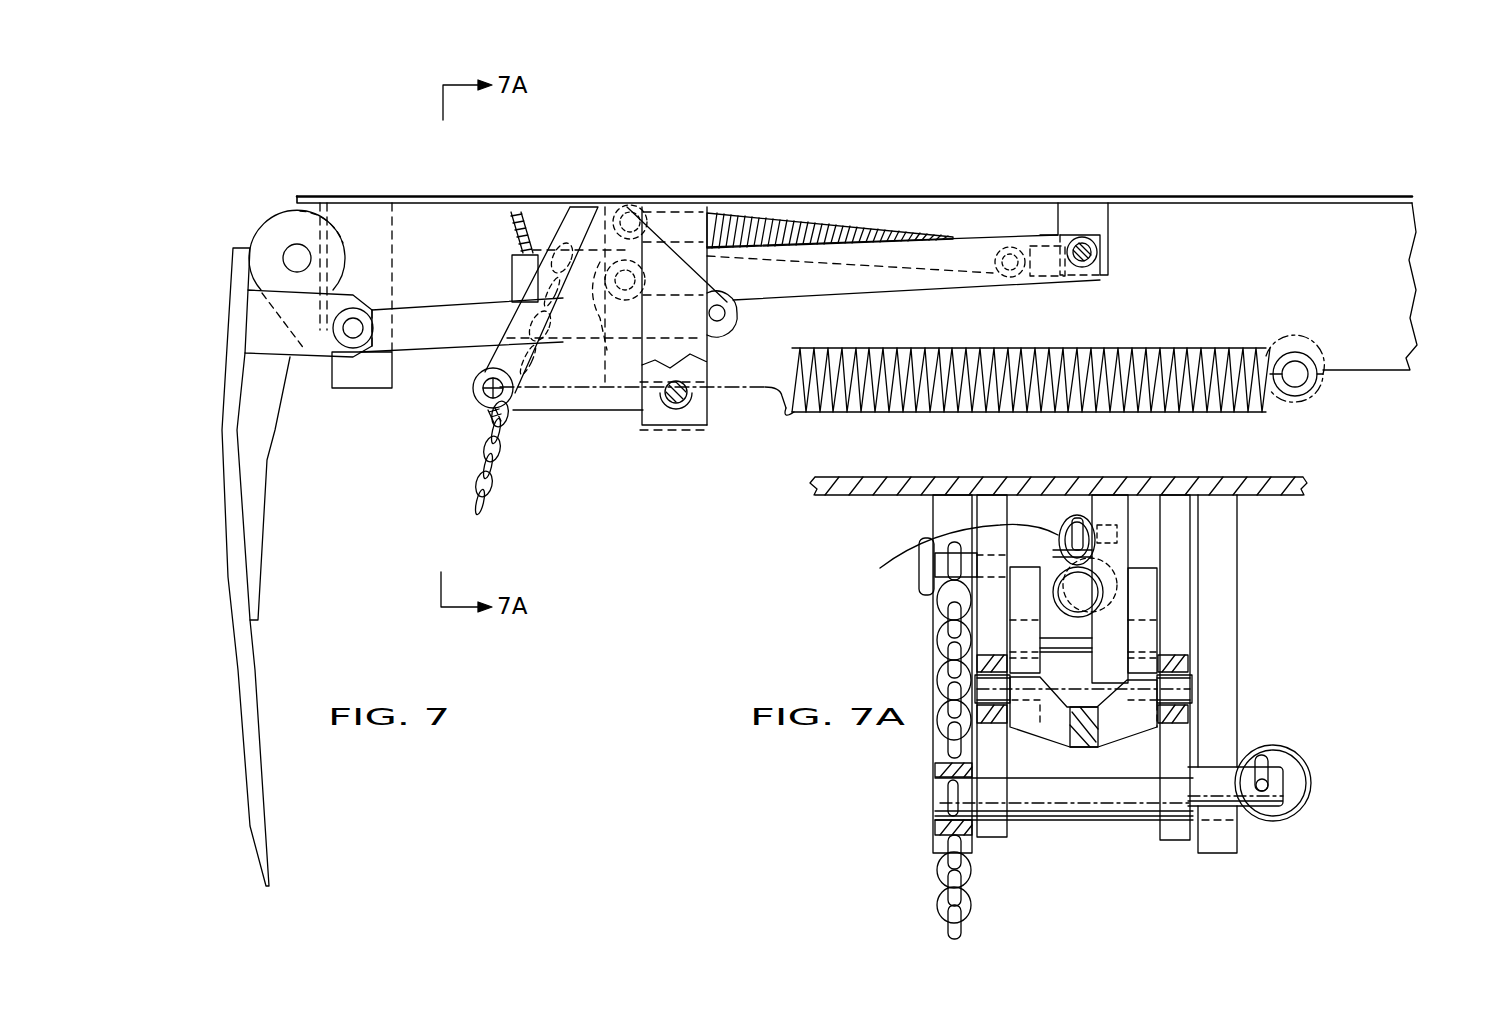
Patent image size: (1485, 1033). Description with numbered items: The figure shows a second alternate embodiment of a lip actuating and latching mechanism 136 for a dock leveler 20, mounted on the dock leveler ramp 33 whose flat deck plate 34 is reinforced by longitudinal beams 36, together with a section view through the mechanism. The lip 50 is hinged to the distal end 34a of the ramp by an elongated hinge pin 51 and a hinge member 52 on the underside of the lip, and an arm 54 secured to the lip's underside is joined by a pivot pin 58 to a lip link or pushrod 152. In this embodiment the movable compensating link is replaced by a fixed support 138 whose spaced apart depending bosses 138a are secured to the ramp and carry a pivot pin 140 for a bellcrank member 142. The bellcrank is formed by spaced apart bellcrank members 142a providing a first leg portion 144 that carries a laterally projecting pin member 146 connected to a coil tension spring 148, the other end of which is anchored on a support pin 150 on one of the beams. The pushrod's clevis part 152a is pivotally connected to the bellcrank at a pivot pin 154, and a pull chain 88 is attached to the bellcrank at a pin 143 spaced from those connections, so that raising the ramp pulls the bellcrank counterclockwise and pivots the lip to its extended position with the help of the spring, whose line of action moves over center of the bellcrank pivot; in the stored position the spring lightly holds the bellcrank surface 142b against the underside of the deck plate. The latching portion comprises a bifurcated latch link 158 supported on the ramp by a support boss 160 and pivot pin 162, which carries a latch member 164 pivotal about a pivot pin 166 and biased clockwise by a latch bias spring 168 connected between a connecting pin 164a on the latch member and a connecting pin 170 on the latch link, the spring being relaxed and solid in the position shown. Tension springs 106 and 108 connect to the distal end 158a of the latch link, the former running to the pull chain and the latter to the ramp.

In FIG. 7, the dock leveler 20 is at (1076, 162).
In FIG. 7, the dock leveler ramp 33 is at (1230, 176).
In FIG. 7, the deck plate 34 is at (893, 196).
In FIG. 7A, the deck plate 34 is at (1268, 477).
In FIG. 7, the distal end of the ramp 34a is at (310, 196).
In FIG. 7, the longitudinal beams 36 is at (1413, 283).
In FIG. 7, the lip 50 is at (218, 580).
In FIG. 7, the hinge pin 51 is at (290, 260).
In FIG. 7, the hinge member 52 is at (265, 205).
In FIG. 7, the arm 54 is at (245, 355).
In FIG. 7, the pivot pin 58 is at (355, 350).
In FIG. 7, the pull chain 88 is at (472, 513).
In FIG. 7A, the pull chain 88 is at (940, 628).
In FIG. 7, the tension spring 106 is at (490, 428).
In FIG. 7, the tension spring 108 is at (515, 215).
In FIG. 7, the lip actuating and latching mechanism 136 is at (611, 438).
In FIG. 7A, the lip actuating and latching mechanism 136 is at (1079, 868).
In FIG. 7A, the fixed support 138 is at (1243, 623).
In FIG. 7, the depending bosses 138a is at (730, 352).
In FIG. 7A, the depending bosses 138a is at (925, 510).
In FIG. 7, the pivot pin 140 is at (676, 403).
In FIG. 7A, the pivot pin 140 is at (1077, 820).
In FIG. 7, the bellcrank member 142 is at (543, 415).
In FIG. 7A, the bellcrank member 142 is at (1185, 855).
In FIG. 7A, the bellcrank members 142a is at (1018, 505).
In FIG. 7, the bellcrank surface 142b is at (615, 200).
In FIG. 7A, the bellcrank surface 142b is at (1003, 515).
In FIG. 7, the pin 143 is at (582, 200).
In FIG. 7A, the pin 143 is at (922, 595).
In FIG. 7, the first leg portion 144 is at (475, 395).
In FIG. 7A, the pin member 146 is at (1268, 810).
In FIG. 7, the coil tension spring 148 is at (960, 345).
In FIG. 7A, the coil tension spring 148 is at (1300, 755).
In FIG. 7, the support pin 150 is at (1318, 385).
In FIG. 7, the lip link or pushrod 152 is at (455, 298).
In FIG. 7A, the lip link or pushrod 152 is at (1068, 797).
In FIG. 7A, the clevis part 152a is at (1040, 728).
In FIG. 7, the pivot pin 154 is at (725, 298).
In FIG. 7A, the pivot pin 154 is at (1175, 688).
In FIG. 7, the latch link 158 is at (842, 290).
In FIG. 7A, the latch link 158 is at (1157, 613).
In FIG. 7, the distal end of the latch link 158a is at (512, 268).
In FIG. 7, the support boss 160 is at (1110, 225).
In FIG. 7, the pivot pin 162 is at (1085, 267).
In FIG. 7, the latch member 164 is at (607, 316).
In FIG. 7A, the latch member 164 is at (1108, 505).
In FIG. 7, the connecting pin 164a is at (660, 205).
In FIG. 7A, the connecting pin 164a is at (1053, 577).
In FIG. 7, the pivot pin 166 is at (674, 316).
In FIG. 7A, the pivot pin 166 is at (1073, 637).
In FIG. 7A, the latch bias spring 168 is at (966, 566).
In FIG. 7, the connecting pin 170 is at (1010, 246).